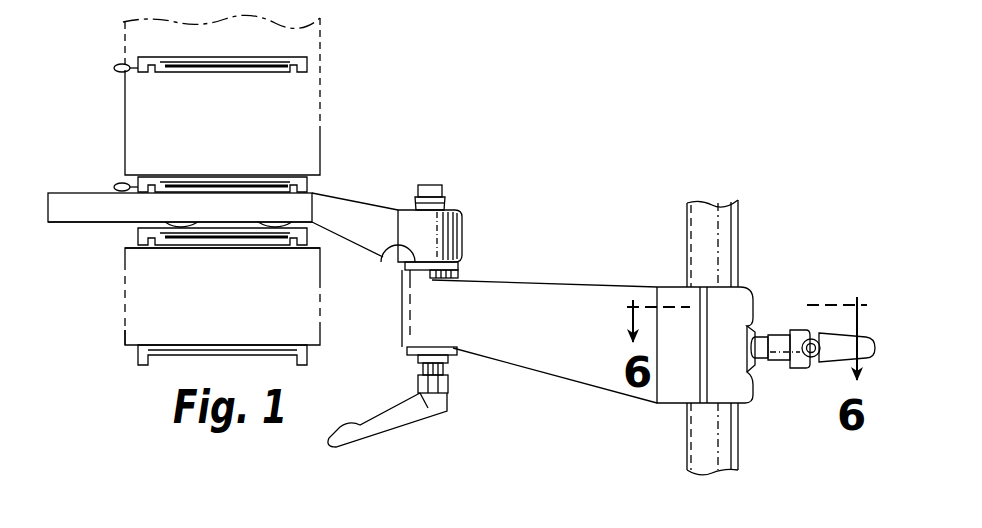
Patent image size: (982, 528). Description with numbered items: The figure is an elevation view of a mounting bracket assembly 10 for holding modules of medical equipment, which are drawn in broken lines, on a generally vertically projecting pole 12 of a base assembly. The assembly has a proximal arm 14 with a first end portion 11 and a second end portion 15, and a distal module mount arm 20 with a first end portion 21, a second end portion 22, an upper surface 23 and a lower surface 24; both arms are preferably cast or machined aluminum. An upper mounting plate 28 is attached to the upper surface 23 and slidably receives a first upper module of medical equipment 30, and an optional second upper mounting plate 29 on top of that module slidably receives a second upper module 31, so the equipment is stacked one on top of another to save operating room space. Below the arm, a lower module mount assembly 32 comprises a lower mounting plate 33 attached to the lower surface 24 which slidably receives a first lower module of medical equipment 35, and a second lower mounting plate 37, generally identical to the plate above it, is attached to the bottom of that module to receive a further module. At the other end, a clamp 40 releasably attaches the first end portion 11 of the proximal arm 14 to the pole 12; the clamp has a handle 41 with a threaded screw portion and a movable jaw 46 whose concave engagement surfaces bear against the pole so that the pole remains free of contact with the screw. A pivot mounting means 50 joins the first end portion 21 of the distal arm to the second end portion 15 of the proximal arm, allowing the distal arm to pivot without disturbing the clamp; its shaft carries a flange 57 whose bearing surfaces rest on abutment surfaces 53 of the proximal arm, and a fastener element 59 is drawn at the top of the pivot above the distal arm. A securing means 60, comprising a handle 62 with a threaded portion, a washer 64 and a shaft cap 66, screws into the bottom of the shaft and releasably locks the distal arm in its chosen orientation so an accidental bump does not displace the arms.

The mounting bracket assembly 10 is at (561, 139).
The first end portion of the proximal arm 11 is at (675, 393).
The pole 12 is at (723, 218).
The proximal arm 14 is at (583, 284).
The second end portion of the proximal arm 15 is at (419, 301).
The distal module mount arm 20 is at (357, 200).
The first end portion of the distal module mount arm 21 is at (435, 230).
The second end portion of the distal module mount arm 22 is at (122, 258).
The upper surface 23 is at (70, 192).
The lower surface 24 is at (65, 223).
The upper mounting plate 28 is at (270, 187).
The second upper mounting plate 29 is at (270, 67).
The first upper module of medical equipment 30 is at (125, 98).
The second upper module of medical equipment 31 is at (125, 45).
The lower module mount assembly 32 is at (195, 296).
The lower mounting plate 33 is at (307, 238).
The first lower module of medical equipment 35 is at (125, 327).
The second lower mounting plate 37 is at (307, 353).
The clamp 40 is at (746, 286).
The handle 41 is at (830, 353).
The movable jaw 46 is at (743, 327).
The pivot mounting means 50 is at (466, 264).
The abutment surfaces 53 is at (392, 260).
The flange 57 is at (427, 277).
The pivot bolt 59 is at (433, 185).
The securing means 60 is at (456, 388).
The handle 62 is at (397, 417).
The washer 64 is at (423, 368).
The shaft cap 66 is at (430, 348).